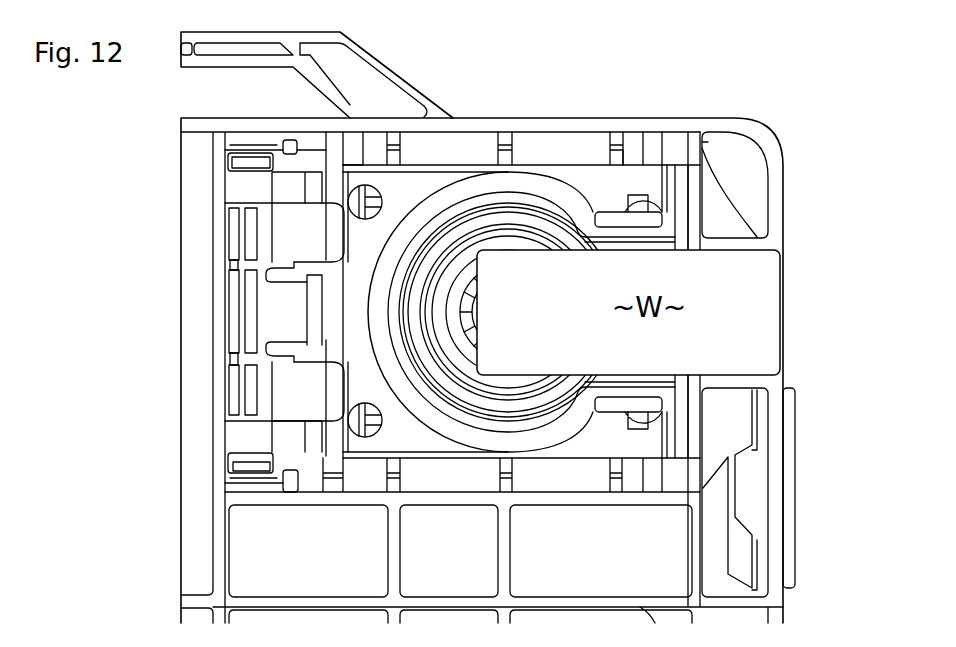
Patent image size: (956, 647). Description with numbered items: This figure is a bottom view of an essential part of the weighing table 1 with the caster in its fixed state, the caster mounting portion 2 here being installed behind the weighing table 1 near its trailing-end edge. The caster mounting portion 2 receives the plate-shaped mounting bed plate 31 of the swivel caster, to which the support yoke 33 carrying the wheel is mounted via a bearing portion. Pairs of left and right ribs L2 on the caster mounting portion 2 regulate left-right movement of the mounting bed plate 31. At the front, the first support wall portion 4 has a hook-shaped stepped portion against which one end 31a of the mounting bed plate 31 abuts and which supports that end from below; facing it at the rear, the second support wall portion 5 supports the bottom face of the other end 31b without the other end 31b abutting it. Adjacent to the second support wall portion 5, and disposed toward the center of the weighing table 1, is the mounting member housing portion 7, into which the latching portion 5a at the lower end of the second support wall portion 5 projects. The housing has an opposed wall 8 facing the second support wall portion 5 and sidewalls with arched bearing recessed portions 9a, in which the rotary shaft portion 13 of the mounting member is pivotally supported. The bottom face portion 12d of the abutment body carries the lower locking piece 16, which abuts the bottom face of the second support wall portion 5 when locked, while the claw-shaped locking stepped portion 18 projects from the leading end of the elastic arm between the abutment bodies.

The weighing table 1 is at (778, 137).
The caster mounting portion 2 is at (563, 161).
The first support wall portion 4 is at (733, 217).
The second support wall portion 5 is at (378, 452).
The latching portion 5a is at (320, 305).
The mounting member housing portion 7 is at (226, 352).
The opposed wall 8 is at (222, 233).
The bearing recessed portion 9a is at (250, 153).
The bottom face portion 12d is at (290, 220).
The rotary shaft portion 13 is at (230, 158).
The lower locking piece 16 is at (369, 200).
The locking stepped portion 18 is at (302, 307).
The mounting bed plate 31 is at (584, 182).
The one end of mounting bed plate 31a is at (657, 172).
The other end of mounting bed plate 31b is at (430, 347).
The support yoke 33 is at (572, 425).
The left and right ribs L2 is at (623, 153).